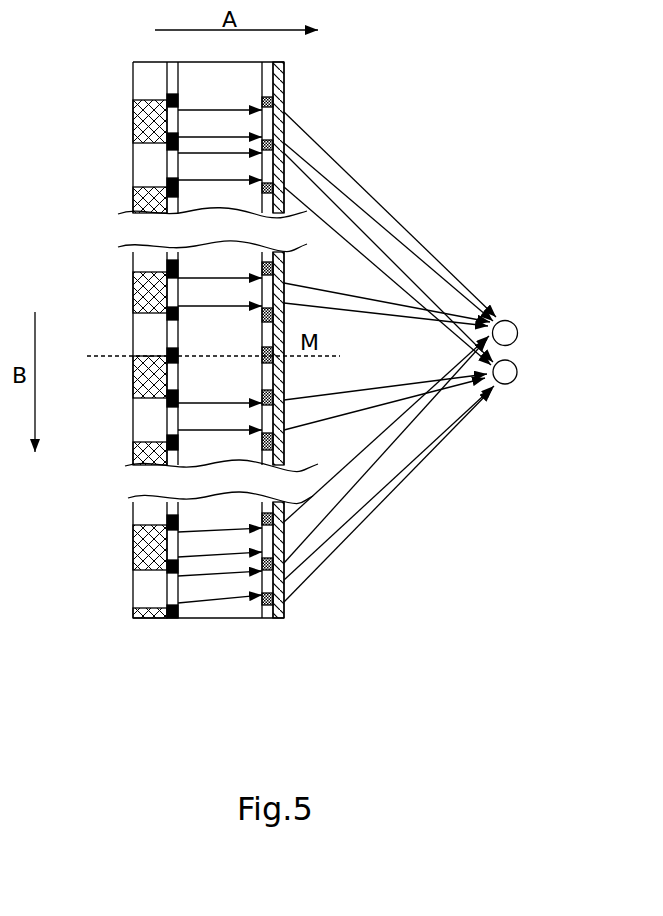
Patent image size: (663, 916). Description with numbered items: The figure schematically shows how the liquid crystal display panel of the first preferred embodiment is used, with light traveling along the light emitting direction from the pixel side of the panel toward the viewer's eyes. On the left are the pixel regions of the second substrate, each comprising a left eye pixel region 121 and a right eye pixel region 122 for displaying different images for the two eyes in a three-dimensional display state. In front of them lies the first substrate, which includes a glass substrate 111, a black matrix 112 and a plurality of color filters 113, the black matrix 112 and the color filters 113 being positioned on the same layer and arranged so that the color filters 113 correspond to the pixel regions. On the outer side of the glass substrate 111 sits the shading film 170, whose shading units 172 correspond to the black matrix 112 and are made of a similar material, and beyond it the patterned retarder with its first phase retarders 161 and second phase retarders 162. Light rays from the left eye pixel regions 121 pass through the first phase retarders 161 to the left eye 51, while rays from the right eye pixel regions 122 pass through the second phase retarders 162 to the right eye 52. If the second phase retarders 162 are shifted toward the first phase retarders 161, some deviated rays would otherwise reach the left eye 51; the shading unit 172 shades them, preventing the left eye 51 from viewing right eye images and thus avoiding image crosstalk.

The left eye pixel region 121 is at (133, 78).
The right eye pixel region 122 is at (133, 118).
The first phase retarder 161 is at (284, 68).
The second phase retarder 162 is at (284, 110).
The shading unit 172 is at (273, 265).
The color filter 113 is at (172, 590).
The black matrix 112 is at (174, 618).
The glass substrate 111 is at (218, 608).
The shading film 170 is at (268, 618).
The right eye 52 is at (505, 320).
The left eye 51 is at (505, 385).